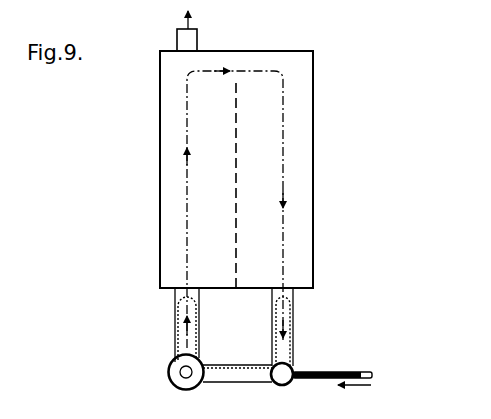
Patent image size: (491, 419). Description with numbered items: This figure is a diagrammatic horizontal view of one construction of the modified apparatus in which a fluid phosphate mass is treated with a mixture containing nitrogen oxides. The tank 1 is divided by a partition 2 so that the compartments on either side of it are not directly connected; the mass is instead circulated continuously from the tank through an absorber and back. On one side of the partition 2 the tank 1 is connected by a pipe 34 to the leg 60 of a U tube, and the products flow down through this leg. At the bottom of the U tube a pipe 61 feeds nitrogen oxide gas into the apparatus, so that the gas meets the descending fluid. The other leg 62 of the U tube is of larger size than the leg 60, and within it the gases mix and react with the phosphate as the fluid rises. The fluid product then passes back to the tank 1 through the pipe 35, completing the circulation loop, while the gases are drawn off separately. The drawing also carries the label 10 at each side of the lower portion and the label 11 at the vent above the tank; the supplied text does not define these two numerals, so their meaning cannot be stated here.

The vat 1 is at (217, 139).
The partition 2 is at (236, 203).
The web 10 is at (162, 372).
The vent chimney 11 is at (183, 39).
The pipe 34 is at (294, 327).
The pipe 35 is at (176, 327).
The leg of U tube 60 is at (291, 383).
The pipe 61 is at (363, 371).
The other leg of U tube 62 is at (199, 387).